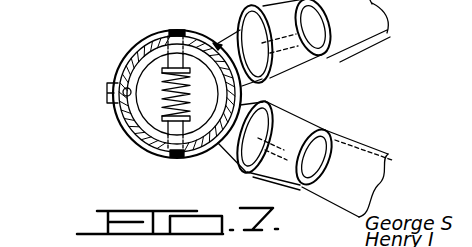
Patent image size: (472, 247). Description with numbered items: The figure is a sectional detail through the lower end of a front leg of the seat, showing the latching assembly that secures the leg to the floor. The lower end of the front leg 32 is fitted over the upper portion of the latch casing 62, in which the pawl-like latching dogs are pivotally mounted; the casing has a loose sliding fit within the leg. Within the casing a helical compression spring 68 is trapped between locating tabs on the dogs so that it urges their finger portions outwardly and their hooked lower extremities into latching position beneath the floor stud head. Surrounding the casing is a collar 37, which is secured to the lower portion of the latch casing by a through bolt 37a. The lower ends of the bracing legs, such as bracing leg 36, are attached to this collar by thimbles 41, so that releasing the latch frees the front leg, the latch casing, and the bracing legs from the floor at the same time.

The collar 37 is at (127, 46).
The latch casing 62 is at (150, 63).
The helical compression spring 68 is at (172, 101).
The through bolt 37a is at (110, 83).
The front leg 32 is at (123, 91).
The thimble 41 is at (305, 62).
The bracing leg 36 is at (368, 152).